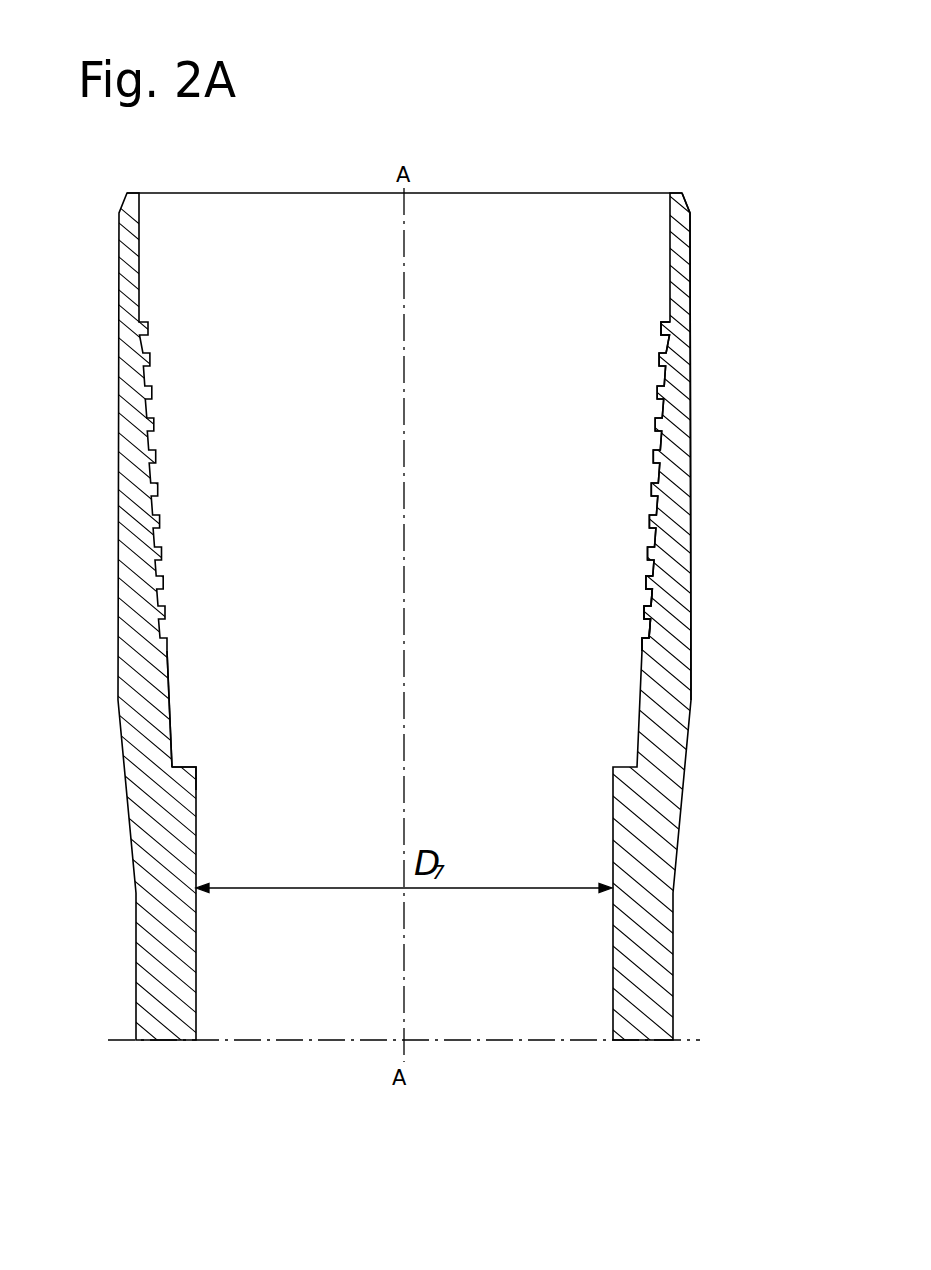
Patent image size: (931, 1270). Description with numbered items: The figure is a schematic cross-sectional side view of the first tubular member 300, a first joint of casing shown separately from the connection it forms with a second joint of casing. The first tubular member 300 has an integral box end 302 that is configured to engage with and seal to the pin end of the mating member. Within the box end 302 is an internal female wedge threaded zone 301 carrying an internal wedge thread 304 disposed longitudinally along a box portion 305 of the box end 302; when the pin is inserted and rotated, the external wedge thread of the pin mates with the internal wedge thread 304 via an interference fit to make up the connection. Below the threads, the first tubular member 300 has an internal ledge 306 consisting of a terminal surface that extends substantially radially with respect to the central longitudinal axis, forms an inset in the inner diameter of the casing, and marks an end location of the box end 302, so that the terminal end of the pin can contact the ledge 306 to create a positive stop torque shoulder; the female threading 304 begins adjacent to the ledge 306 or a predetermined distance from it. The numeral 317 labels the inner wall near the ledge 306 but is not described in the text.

The first tubular member 300 is at (653, 968).
The internal female wedge threaded zone 301 is at (578, 597).
The box end 302 is at (694, 350).
The internal wedge thread 304 is at (653, 332).
The box portion 305 is at (610, 312).
The internal ledge 306 is at (190, 762).
The inner wall section 317 is at (177, 766).